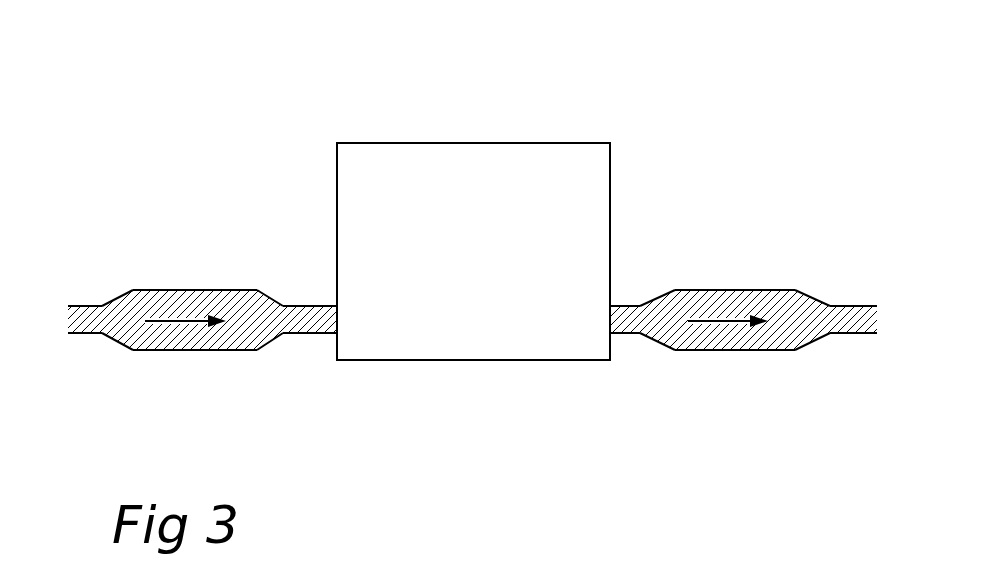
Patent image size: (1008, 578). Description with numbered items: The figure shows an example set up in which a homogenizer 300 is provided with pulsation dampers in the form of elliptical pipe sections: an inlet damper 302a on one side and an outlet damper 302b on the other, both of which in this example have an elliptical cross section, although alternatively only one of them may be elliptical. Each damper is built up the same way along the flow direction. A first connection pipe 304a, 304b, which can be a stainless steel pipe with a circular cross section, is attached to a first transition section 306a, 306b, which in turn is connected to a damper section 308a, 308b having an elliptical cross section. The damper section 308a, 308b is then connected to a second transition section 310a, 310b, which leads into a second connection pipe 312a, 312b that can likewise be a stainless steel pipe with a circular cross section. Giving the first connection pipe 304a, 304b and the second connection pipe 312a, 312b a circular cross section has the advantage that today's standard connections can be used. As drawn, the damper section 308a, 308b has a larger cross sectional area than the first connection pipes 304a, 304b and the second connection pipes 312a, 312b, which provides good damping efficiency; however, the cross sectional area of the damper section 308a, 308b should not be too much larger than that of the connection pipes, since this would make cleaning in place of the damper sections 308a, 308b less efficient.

The homogenizer 300 is at (440, 165).
The inlet damper 302a is at (192, 222).
The outlet damper 302b is at (750, 222).
The first connection pipe 304a is at (87, 333).
The first connection pipe 304b is at (637, 333).
The first transition section 306a is at (110, 298).
The first transition section 306b is at (655, 298).
The damper section 308a is at (187, 290).
The damper section 308b is at (730, 290).
The second transition section 310a is at (280, 300).
The second transition section 310b is at (817, 300).
The second connection pipe 312a is at (307, 333).
The second connection pipe 312b is at (852, 333).